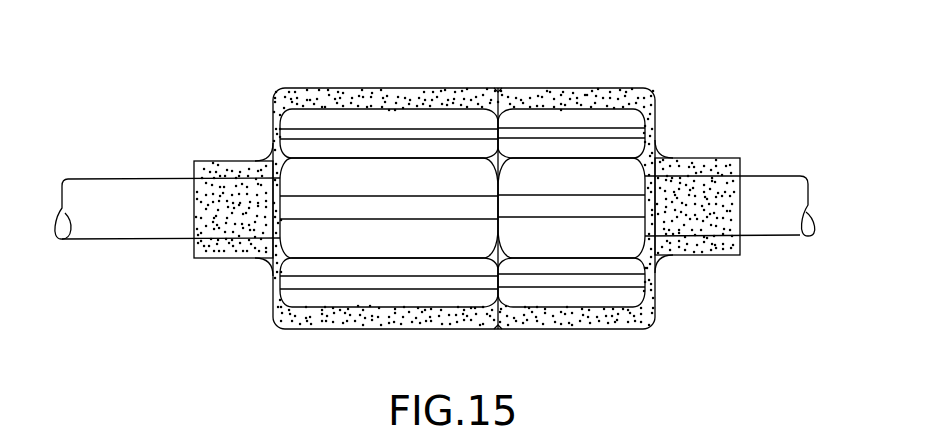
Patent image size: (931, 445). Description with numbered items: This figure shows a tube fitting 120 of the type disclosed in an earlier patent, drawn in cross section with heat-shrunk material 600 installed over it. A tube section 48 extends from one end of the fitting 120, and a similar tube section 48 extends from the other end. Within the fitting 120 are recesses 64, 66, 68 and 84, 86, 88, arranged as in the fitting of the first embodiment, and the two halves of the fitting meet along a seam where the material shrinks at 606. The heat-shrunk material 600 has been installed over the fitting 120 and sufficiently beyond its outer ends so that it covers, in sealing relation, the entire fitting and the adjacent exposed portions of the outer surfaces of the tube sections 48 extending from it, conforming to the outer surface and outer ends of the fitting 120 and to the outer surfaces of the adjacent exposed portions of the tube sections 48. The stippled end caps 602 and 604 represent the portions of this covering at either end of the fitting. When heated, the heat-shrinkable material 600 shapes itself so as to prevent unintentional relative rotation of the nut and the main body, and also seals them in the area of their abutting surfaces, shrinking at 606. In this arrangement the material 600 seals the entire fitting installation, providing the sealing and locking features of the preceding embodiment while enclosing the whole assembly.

The tube section 48 is at (773, 215).
The recess 64 is at (628, 282).
The recess 66 is at (638, 202).
The recess 68 is at (623, 132).
The recess 84 is at (328, 283).
The recess 86 is at (295, 211).
The recess 88 is at (322, 135).
The fitting 120 is at (268, 140).
The heat-shrunk material 600 is at (457, 77).
The left end cap 602 is at (193, 173).
The right end cap 604 is at (740, 168).
The shrunk portion 606 is at (498, 88).